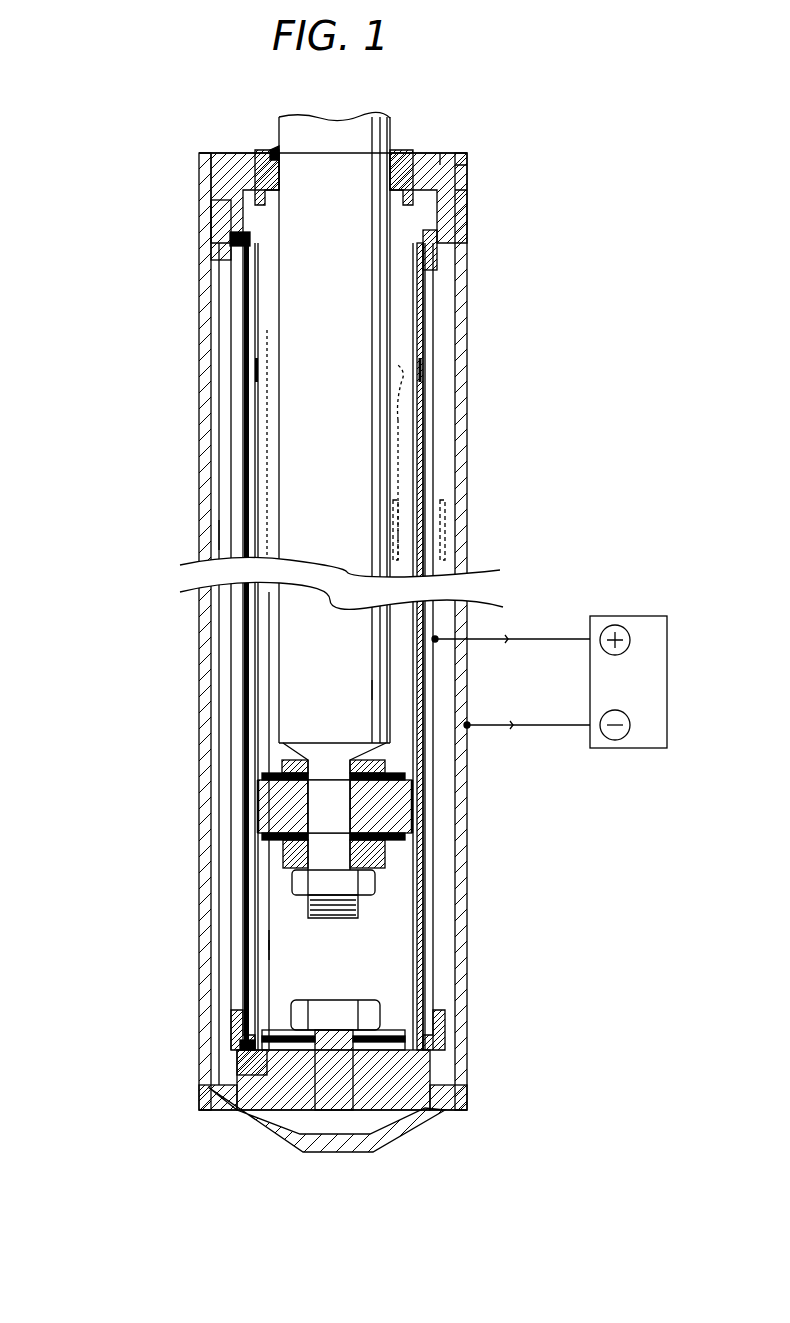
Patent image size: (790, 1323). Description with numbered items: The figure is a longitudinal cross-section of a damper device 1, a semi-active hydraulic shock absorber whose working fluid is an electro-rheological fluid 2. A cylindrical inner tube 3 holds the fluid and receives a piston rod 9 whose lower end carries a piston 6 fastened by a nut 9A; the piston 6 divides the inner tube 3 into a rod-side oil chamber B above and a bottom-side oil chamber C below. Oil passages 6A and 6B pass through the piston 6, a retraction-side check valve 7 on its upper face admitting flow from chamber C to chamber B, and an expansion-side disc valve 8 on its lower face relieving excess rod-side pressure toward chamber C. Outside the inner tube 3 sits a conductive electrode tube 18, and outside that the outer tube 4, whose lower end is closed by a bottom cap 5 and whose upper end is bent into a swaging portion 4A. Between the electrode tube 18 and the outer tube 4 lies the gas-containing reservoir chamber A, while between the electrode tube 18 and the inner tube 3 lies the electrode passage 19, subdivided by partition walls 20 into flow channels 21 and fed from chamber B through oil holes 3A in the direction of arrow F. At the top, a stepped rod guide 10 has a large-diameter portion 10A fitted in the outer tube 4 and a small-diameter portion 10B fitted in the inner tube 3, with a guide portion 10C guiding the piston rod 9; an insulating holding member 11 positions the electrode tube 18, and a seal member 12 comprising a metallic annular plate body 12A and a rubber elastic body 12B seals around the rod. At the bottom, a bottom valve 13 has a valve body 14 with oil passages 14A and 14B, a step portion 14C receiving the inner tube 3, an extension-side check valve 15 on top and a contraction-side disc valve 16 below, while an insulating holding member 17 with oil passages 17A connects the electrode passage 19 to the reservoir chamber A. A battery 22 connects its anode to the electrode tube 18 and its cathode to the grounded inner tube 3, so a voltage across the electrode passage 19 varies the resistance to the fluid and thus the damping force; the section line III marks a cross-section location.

The damper device 1 is at (146, 188).
The electro-rheological fluid 2 is at (300, 945).
The inner tube 3 is at (262, 868).
The oil hole 3A is at (250, 368).
The outer tube 4 is at (460, 312).
The swaging portion 4A is at (450, 165).
The bottom cap 5 is at (438, 1117).
The piston 6 is at (260, 790).
The oil passage 6A is at (265, 815).
The oil passage 6B is at (410, 805).
The retraction-side check valve 7 is at (290, 765).
The disc valve 8 is at (385, 845).
The piston rod 9 is at (310, 455).
The nut 9A is at (375, 888).
The rod guide 10 is at (440, 232).
The large-diameter portion 10A is at (456, 205).
The small-diameter portion 10B is at (440, 265).
The guide portion 10C is at (215, 290).
The holding member 11 is at (230, 240).
The seal member 12 is at (410, 160).
The annular plate body 12A is at (257, 165).
The elastic body 12B is at (272, 150).
The bottom valve 13 is at (436, 1081).
The valve body 14 is at (440, 1062).
The oil passage 14A is at (410, 1036).
The oil passage 14B is at (232, 1108).
The step portion 14C is at (248, 1066).
The extension-side check valve 15 is at (372, 1008).
The disc valve 16 is at (262, 1124).
The holding member 17 is at (245, 1022).
The oil passage 17A is at (248, 1046).
The electrode tube 18 is at (434, 440).
The electrode passage 19 is at (243, 705).
The partition wall 20 is at (242, 640).
The flow channel 21 is at (243, 500).
The battery 22 is at (631, 616).
The reservoir chamber A is at (226, 535).
The rod-side oil chamber B is at (400, 690).
The bottom-side oil chamber C is at (375, 958).
The arrow F is at (270, 420).
The section III is at (450, 532).